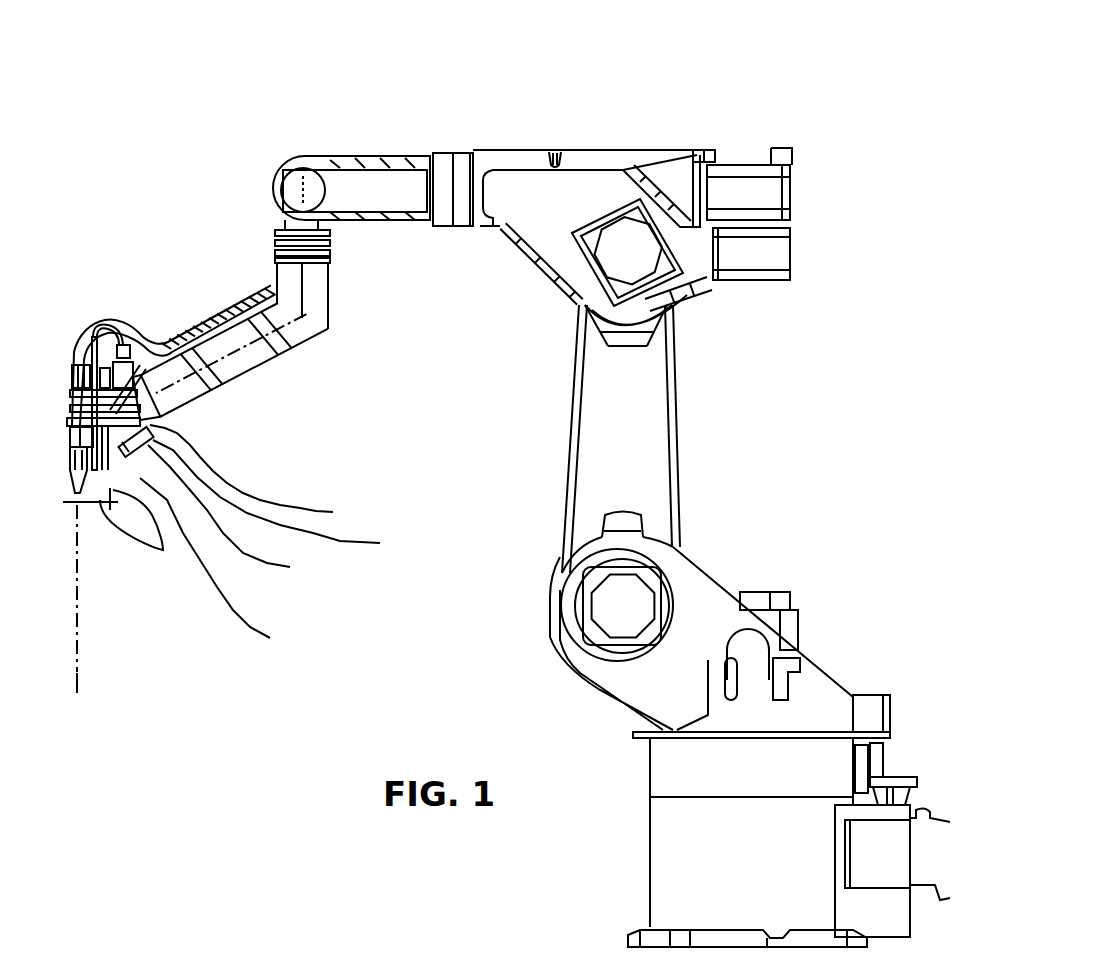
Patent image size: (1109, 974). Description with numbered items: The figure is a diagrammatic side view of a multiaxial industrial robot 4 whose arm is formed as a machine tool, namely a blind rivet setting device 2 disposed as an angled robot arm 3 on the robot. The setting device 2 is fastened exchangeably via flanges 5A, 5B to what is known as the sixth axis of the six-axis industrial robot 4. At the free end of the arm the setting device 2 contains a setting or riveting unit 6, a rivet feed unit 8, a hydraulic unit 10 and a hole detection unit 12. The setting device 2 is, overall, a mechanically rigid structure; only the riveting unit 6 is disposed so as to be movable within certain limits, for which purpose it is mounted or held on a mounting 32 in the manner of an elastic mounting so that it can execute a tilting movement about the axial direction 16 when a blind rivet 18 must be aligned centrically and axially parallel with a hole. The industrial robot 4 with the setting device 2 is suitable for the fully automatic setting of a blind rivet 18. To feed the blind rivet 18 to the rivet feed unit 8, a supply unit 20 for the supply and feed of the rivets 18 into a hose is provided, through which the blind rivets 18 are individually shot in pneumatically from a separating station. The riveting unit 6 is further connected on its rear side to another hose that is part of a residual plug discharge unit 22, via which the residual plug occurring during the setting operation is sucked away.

The blind rivet setting device 2 is at (172, 170).
The angled robot arm 3 is at (312, 370).
The industrial robot 4 is at (693, 78).
The flange 5A is at (320, 268).
The flange 5B is at (353, 255).
The riveting unit 6 is at (72, 400).
The rivet feed unit 8 is at (141, 534).
The hydraulic unit 10 is at (238, 368).
The hole detection unit 12 is at (238, 514).
The axial direction 16 is at (78, 688).
The blind rivet 18 is at (224, 566).
The supply unit 20 is at (261, 476).
The residual plug discharge unit 22 is at (107, 317).
The mounting 32 is at (288, 499).